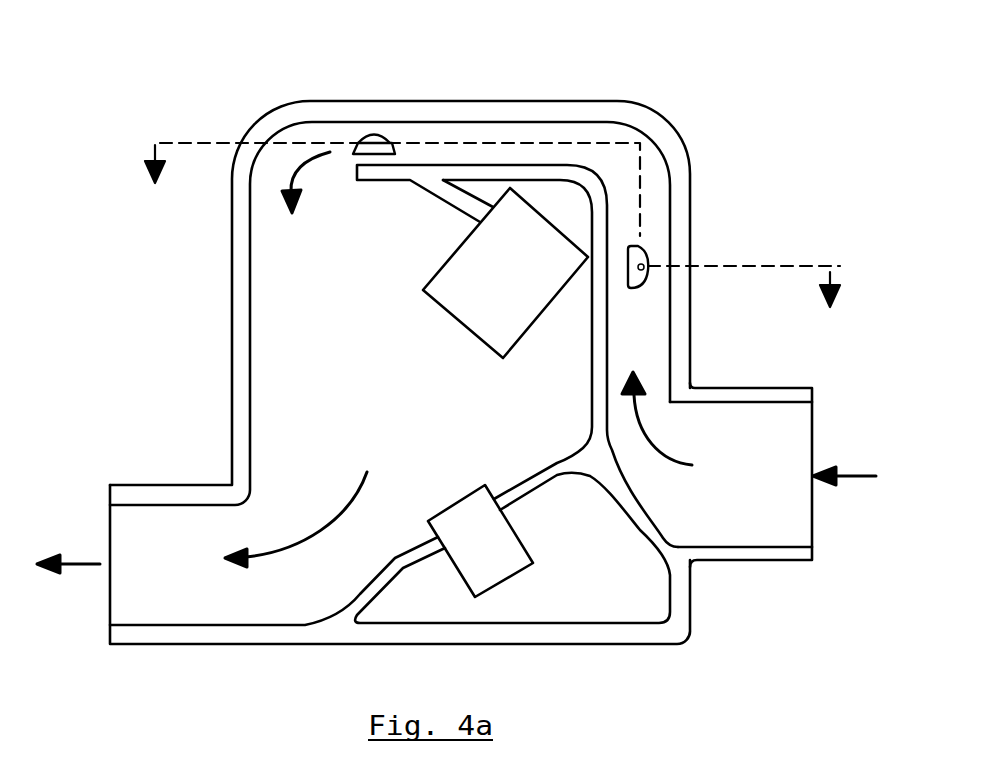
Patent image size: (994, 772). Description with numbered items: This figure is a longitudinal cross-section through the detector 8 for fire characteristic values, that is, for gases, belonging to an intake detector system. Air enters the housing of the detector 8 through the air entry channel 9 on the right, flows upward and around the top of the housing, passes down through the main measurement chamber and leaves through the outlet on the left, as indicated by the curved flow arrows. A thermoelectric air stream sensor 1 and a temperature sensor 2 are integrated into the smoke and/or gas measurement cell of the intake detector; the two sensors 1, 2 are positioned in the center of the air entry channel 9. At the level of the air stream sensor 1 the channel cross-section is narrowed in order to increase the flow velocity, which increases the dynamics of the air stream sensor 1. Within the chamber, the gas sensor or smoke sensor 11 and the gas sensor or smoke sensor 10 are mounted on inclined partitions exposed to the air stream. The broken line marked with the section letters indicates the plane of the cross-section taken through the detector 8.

The air stream sensor 1 is at (374, 140).
The temperature sensor 2 is at (643, 255).
The detector 8 is at (152, 316).
The air entry channel 9 is at (810, 508).
The gas sensor or smoke sensor 10 is at (503, 563).
The gas sensor or smoke sensor 11 is at (457, 275).